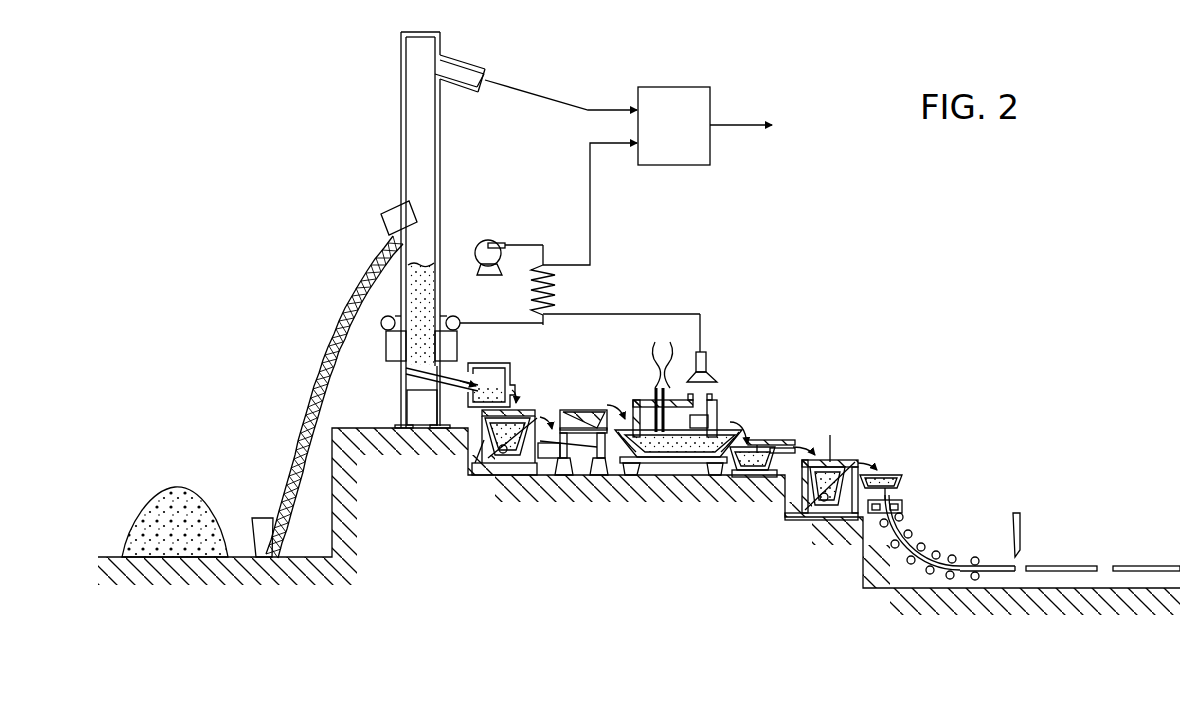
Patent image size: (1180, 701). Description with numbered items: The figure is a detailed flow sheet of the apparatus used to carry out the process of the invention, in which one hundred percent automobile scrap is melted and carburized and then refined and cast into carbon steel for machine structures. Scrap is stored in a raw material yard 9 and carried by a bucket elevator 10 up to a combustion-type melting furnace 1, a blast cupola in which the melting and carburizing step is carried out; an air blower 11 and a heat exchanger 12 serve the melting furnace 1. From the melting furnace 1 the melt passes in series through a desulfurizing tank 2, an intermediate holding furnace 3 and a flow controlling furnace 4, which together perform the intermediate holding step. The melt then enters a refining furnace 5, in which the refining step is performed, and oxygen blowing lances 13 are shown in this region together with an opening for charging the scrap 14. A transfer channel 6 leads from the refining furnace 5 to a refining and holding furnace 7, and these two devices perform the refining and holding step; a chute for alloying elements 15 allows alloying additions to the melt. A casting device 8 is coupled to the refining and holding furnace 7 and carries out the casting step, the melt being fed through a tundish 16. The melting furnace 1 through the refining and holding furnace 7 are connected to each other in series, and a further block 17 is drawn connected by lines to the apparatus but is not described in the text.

The combustion-type melting furnace 1 is at (402, 106).
The desulfurizing tank 2 is at (497, 365).
The intermediate holding furnace 3 is at (525, 472).
The flow controlling furnace 4 is at (567, 413).
The refining furnace 5 is at (701, 475).
The transfer channel 6 is at (784, 440).
The refining and holding furnace 7 is at (835, 513).
The casting device 8 is at (902, 507).
The raw material yard 9 is at (200, 502).
The bucket elevator 10 is at (322, 364).
The air blower 11 is at (493, 250).
The heat exchanger 12 is at (560, 289).
The oxygen blowing lances 13 is at (673, 338).
The opening for charging the scrap 14 is at (638, 397).
The chute for alloying elements 15 is at (835, 460).
The tundish 16 is at (901, 476).
The control unit 17 is at (688, 93).